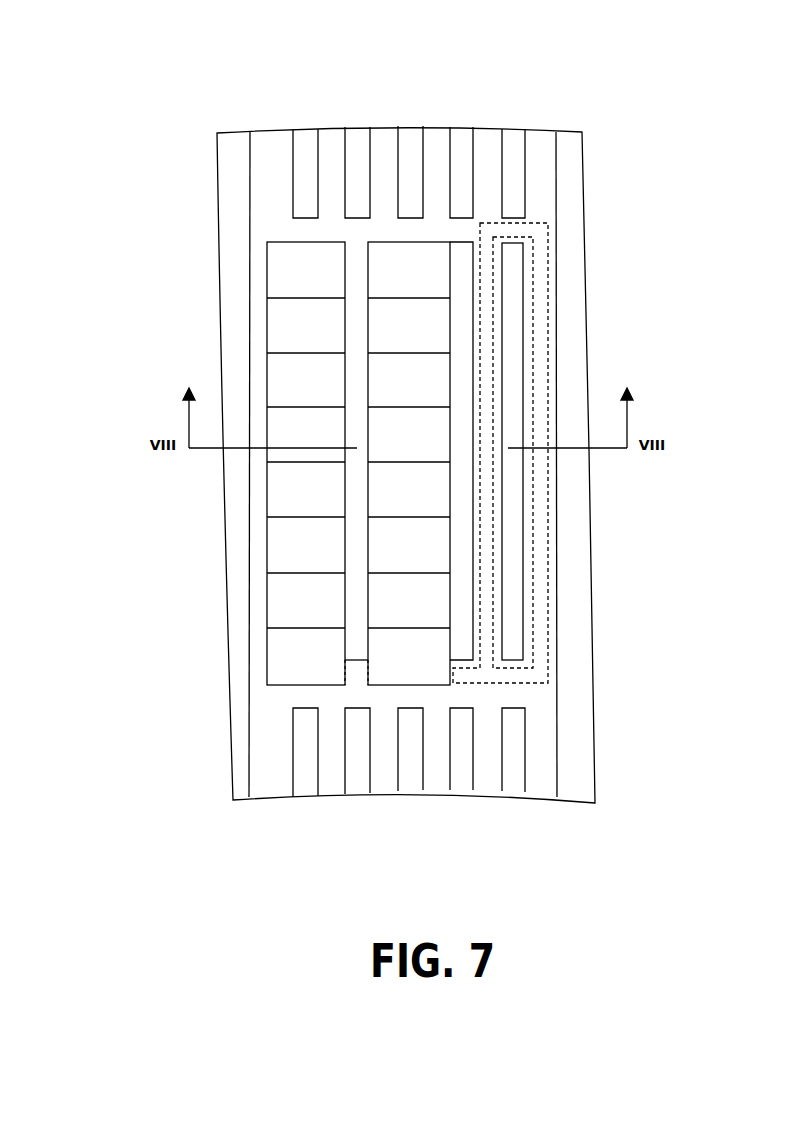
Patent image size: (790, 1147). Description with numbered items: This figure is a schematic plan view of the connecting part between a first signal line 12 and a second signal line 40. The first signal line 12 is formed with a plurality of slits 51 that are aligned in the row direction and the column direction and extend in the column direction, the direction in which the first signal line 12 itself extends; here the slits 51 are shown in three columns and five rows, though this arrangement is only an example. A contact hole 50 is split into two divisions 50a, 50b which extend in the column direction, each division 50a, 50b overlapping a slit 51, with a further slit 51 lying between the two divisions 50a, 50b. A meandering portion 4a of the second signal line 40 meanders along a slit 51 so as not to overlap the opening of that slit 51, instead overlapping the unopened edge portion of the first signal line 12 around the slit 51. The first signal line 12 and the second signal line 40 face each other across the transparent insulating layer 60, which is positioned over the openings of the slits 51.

The first signal line 12 is at (537, 151).
The meandering portion 4a is at (553, 261).
The second signal line 40 is at (570, 676).
The contact hole 50 is at (275, 436).
The division 50a is at (287, 272).
The division 50b is at (407, 250).
The slit 51 is at (297, 140).
The transparent insulating layer 60 is at (577, 708).